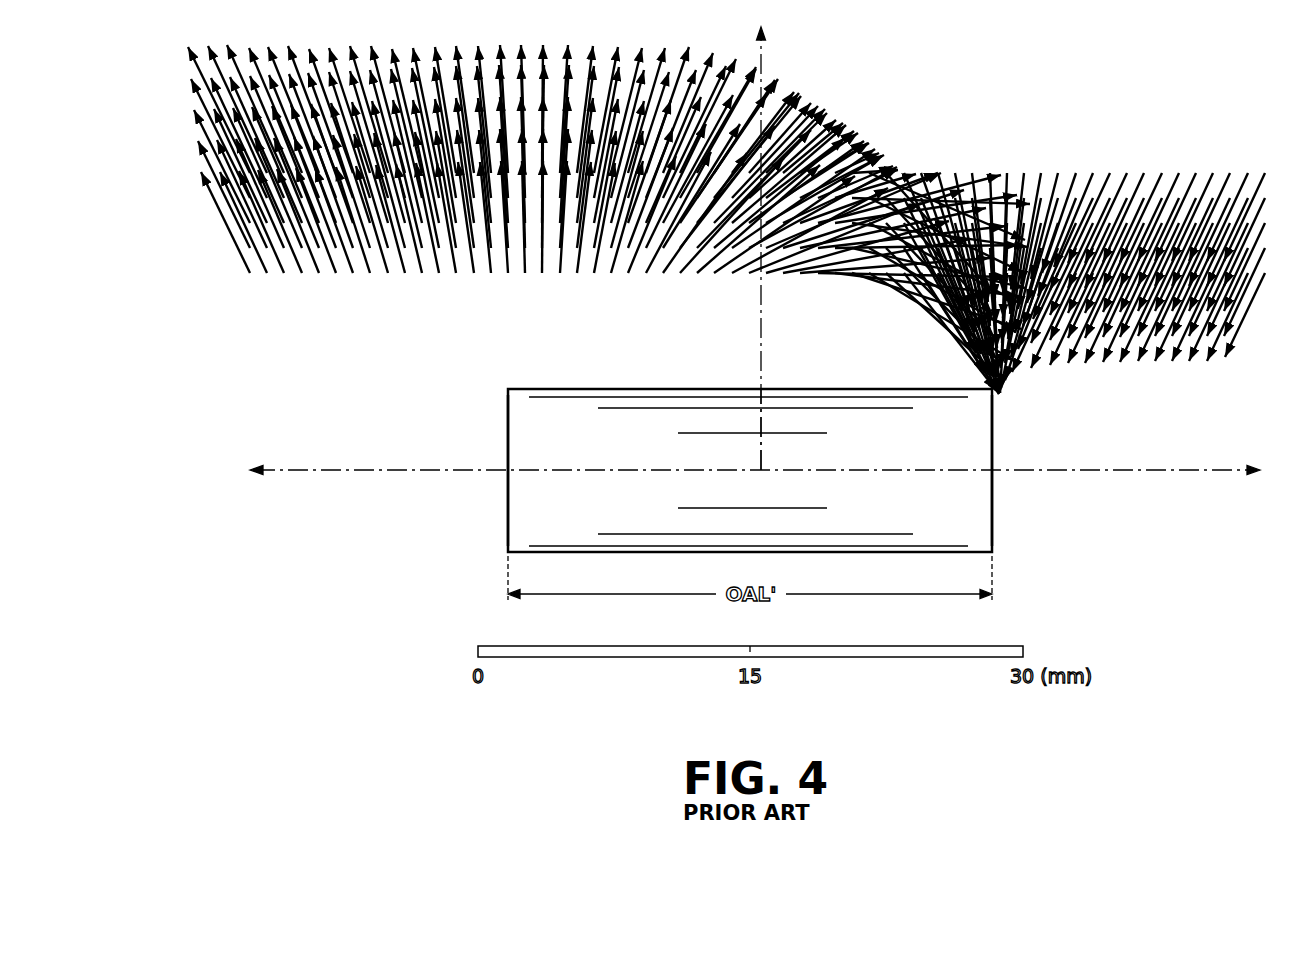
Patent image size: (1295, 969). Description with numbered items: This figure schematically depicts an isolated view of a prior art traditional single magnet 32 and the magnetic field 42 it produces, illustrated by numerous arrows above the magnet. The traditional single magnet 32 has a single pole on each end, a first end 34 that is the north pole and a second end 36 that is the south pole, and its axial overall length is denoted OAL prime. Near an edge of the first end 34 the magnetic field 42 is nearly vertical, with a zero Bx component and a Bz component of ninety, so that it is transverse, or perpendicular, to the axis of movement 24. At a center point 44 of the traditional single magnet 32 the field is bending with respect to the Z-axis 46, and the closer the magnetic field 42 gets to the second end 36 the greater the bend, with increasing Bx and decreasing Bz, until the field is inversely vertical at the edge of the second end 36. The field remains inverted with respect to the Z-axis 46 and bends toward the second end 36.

The axis of movement 24 is at (1153, 470).
The traditional single magnet 32 is at (477, 409).
The first end 34 is at (507, 537).
The second end 36 is at (993, 537).
The magnetic field 42 is at (913, 149).
The center point 44 is at (761, 470).
The Z-axis 46 is at (761, 52).